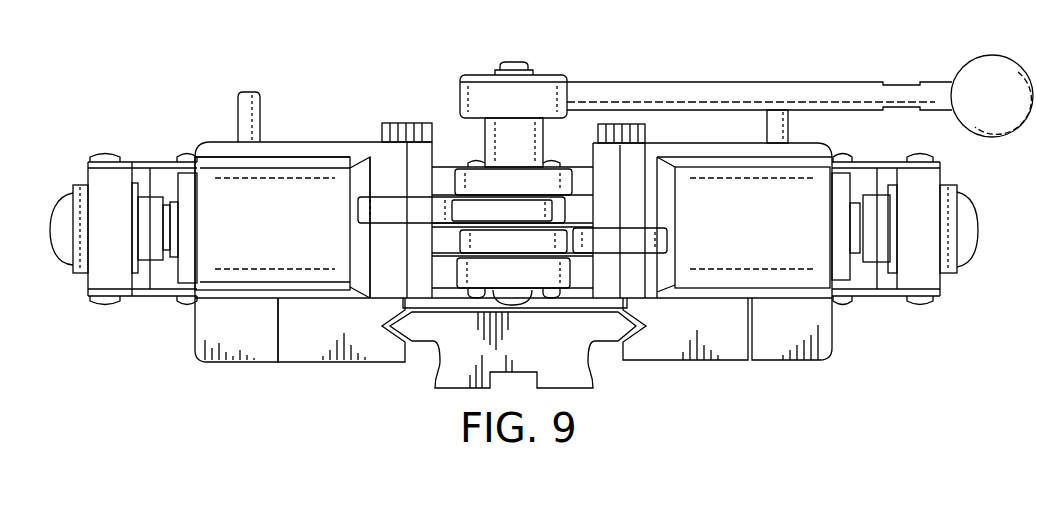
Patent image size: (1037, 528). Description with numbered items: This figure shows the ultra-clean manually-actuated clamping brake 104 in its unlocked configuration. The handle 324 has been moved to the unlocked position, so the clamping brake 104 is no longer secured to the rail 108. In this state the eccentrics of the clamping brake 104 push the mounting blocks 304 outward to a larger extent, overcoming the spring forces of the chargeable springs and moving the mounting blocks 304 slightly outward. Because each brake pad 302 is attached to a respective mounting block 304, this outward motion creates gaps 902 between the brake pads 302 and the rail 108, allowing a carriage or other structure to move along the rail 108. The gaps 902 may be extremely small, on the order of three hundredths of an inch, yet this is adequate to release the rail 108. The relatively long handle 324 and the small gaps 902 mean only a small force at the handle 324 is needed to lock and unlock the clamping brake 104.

The clamping brake 104 is at (395, 60).
The handle 324 is at (723, 82).
The mounting block 304 is at (255, 363).
The brake pad 302 is at (312, 363).
The rail 108 is at (433, 380).
The gap 902 is at (640, 337).